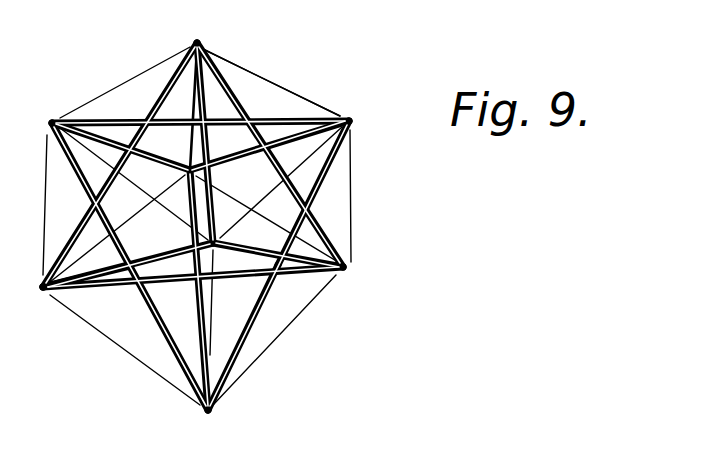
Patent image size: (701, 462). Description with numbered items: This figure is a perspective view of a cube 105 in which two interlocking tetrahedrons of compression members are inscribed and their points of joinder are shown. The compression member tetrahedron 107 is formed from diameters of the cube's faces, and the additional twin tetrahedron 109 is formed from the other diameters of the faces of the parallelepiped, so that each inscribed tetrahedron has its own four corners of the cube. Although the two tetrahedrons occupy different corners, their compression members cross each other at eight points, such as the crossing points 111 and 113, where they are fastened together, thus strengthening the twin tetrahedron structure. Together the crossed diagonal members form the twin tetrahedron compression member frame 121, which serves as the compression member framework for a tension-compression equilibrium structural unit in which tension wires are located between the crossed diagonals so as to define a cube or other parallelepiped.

The cube 105 is at (318, 55).
The compression member tetrahedron 107 is at (170, 79).
The twin tetrahedron 109 is at (326, 187).
The crossing point 111 is at (294, 116).
The crossing point 113 is at (120, 288).
The twin tetrahedron compression member frame 121 is at (260, 322).